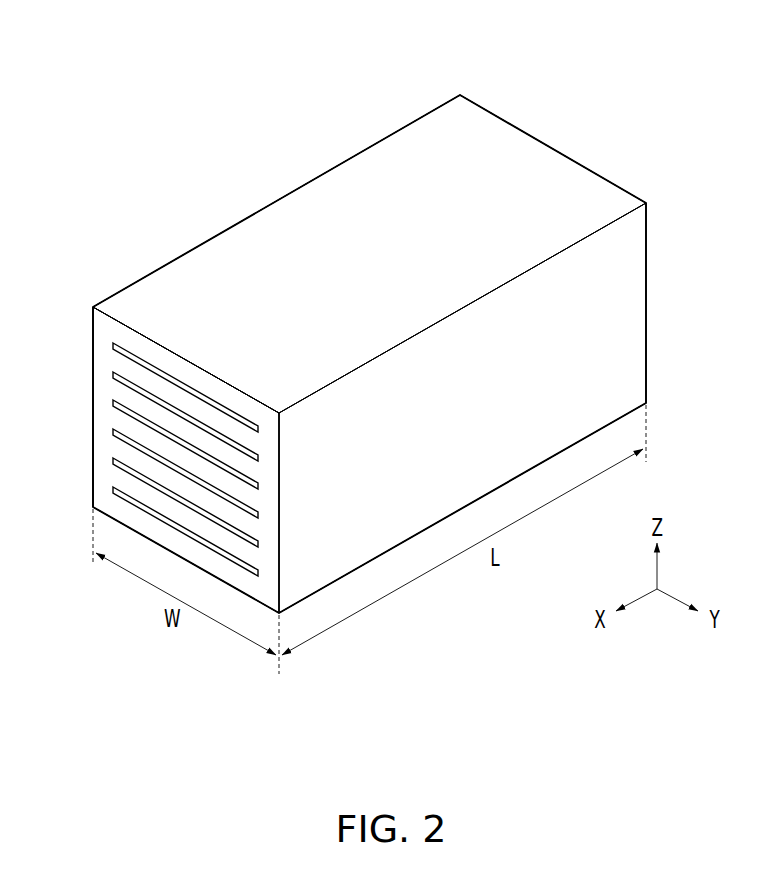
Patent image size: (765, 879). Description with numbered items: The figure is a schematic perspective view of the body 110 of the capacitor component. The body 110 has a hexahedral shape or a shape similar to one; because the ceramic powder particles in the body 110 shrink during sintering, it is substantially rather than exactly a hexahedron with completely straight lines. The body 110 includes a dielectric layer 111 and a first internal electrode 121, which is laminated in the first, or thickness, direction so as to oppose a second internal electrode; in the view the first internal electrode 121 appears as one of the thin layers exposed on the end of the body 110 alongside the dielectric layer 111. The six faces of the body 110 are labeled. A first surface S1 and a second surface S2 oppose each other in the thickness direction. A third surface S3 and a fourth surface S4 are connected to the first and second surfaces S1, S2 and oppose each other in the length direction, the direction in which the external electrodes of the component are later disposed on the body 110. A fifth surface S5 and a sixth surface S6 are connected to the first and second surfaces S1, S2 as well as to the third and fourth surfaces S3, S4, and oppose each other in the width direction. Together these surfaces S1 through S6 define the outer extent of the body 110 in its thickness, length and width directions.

The body 110 is at (122, 47).
The dielectric layer 111 is at (100, 397).
The first internal electrode 121 is at (128, 354).
The first surface S1 is at (353, 110).
The second surface S2 is at (407, 547).
The third surface S3 is at (186, 463).
The fourth surface S4 is at (565, 149).
The fifth surface S5 is at (520, 440).
The sixth surface S6 is at (211, 235).